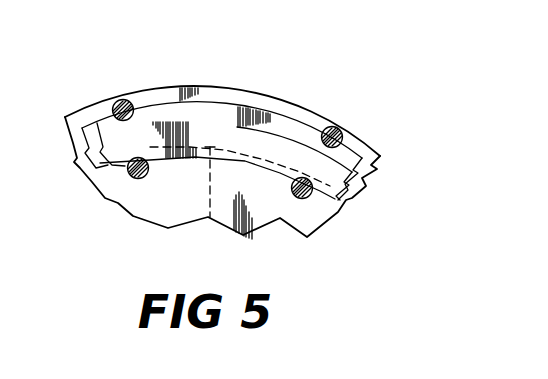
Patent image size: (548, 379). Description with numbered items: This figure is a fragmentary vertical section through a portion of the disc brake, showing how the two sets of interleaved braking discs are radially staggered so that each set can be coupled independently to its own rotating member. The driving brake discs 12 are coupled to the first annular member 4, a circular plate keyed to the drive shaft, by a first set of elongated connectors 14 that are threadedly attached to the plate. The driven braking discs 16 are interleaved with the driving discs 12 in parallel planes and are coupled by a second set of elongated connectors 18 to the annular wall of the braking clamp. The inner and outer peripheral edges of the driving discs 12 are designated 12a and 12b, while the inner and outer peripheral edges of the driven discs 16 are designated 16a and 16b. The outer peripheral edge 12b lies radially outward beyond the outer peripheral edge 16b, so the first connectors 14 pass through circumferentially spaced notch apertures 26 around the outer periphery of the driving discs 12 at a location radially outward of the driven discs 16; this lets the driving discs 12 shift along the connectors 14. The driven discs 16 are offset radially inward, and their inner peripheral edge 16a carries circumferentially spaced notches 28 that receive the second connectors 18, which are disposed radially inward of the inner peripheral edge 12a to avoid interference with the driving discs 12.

The first annular member 4 is at (223, 87).
The driving brake discs 12 is at (165, 108).
The inner peripheral edge of driving discs 12a is at (97, 181).
The outer peripheral edge of driving discs 12b is at (241, 103).
The first set of elongated connectors 14 is at (118, 101).
The driven braking discs 16 is at (283, 153).
The inner peripheral edge of driven discs 16a is at (163, 170).
The outer peripheral edge of driven discs 16b is at (282, 131).
The second set of elongated connectors 18 is at (131, 177).
The notch apertures 26 is at (131, 101).
The notches 28 is at (137, 179).